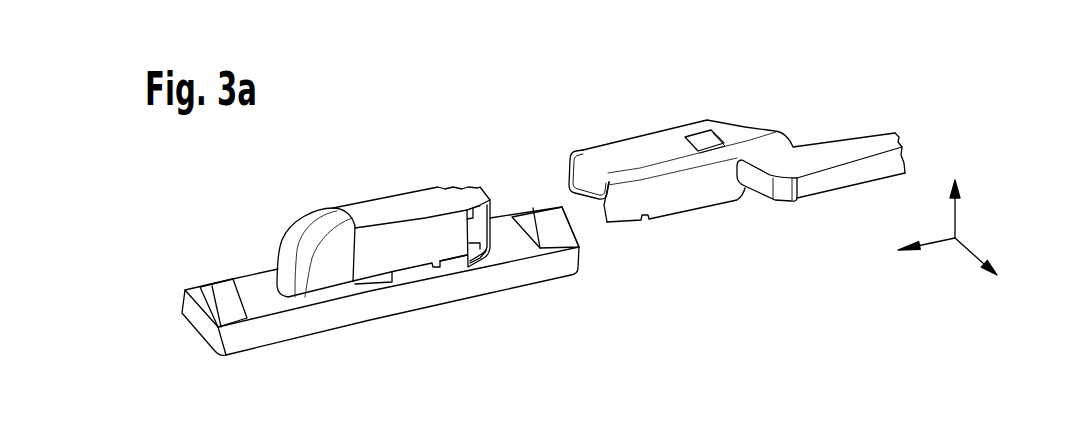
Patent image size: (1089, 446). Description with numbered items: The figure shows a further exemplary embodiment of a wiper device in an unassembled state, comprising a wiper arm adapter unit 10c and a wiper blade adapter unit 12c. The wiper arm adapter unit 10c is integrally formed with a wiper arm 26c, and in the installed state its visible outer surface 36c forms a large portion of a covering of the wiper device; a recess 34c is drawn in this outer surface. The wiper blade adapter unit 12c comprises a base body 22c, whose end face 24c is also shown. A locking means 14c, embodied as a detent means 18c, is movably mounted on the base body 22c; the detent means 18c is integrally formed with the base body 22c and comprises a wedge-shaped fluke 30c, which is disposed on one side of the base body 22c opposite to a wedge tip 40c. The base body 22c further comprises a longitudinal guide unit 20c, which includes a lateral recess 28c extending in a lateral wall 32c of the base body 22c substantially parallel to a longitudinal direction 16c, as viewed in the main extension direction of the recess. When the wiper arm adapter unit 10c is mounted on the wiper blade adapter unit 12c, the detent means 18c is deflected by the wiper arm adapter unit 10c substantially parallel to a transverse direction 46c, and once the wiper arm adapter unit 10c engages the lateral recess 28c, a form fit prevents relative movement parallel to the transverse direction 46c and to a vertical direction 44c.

The wiper arm adapter unit 10c is at (657, 122).
The wiper blade adapter unit 12c is at (246, 242).
The locking means 14c is at (462, 195).
The longitudinal direction 16c is at (926, 243).
The detent means 18c is at (492, 247).
The longitudinal guide unit 20c is at (502, 293).
The base body 22c is at (356, 210).
The end face of base body 24c is at (200, 331).
The wiper arm 26c is at (863, 146).
The lateral recess 28c is at (403, 274).
The fluke 30c is at (495, 257).
The lateral wall 32c is at (443, 260).
The recess 34c is at (717, 133).
The visible outer surface 36c is at (619, 150).
The wedge tip 40c is at (493, 252).
The vertical direction 44c is at (956, 212).
The transverse direction 46c is at (976, 253).